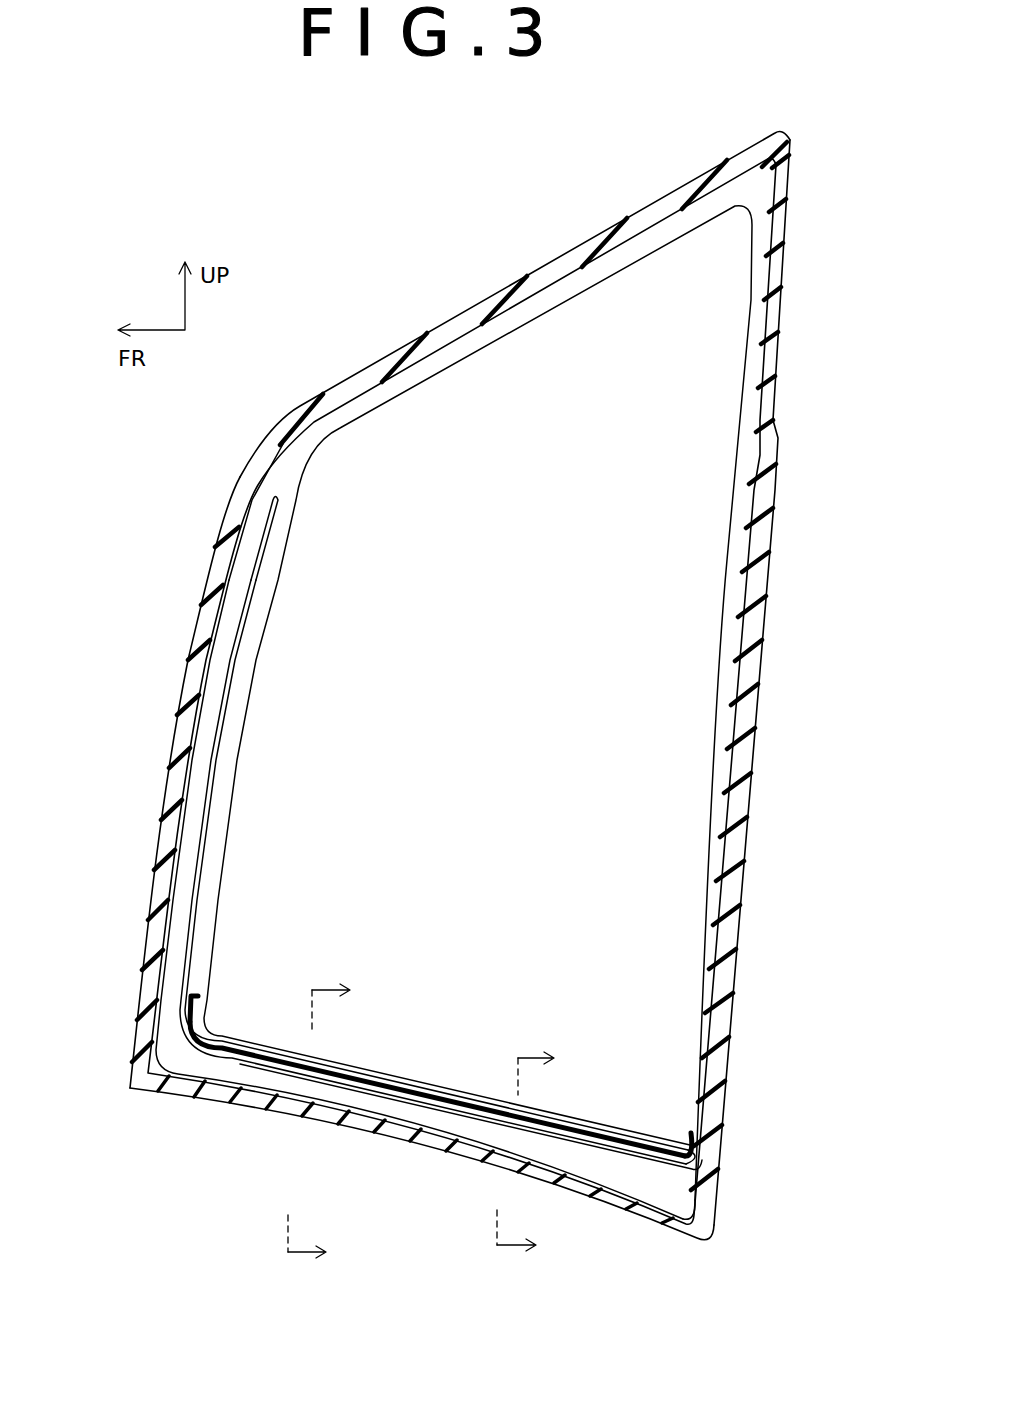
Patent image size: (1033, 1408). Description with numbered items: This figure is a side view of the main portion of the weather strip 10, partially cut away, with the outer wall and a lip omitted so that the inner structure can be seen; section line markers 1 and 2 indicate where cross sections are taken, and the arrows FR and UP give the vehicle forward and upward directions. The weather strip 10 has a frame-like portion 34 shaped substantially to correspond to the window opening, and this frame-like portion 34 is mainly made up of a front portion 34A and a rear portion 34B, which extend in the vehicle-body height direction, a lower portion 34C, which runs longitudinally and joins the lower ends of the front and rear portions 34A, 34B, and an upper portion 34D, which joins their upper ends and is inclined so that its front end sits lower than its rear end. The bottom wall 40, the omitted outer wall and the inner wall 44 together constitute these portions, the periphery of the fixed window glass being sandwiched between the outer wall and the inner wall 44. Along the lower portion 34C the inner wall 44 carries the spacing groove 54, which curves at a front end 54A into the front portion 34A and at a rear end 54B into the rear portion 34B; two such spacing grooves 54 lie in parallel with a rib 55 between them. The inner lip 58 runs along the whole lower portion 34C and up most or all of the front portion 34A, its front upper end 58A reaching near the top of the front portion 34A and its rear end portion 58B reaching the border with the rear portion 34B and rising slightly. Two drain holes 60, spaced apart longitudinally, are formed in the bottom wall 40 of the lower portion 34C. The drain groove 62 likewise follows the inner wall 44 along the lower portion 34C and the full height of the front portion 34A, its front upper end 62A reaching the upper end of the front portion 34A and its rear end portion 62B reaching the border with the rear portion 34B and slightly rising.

The weather strip 10 is at (456, 674).
The frame-like portion 34 is at (456, 674).
The front portion 34A is at (168, 724).
The rear portion 34B is at (760, 755).
The lower portion 34C is at (438, 1162).
The upper portion 34D is at (496, 284).
The bottom wall 40 is at (462, 328).
The inner wall 44 is at (480, 335).
The spacing groove 54 is at (441, 1059).
The front end of spacing groove 54A is at (197, 994).
The rear end of spacing groove 54B is at (690, 1122).
The rib 55 is at (372, 1082).
The inner lip 58 is at (499, 833).
The front upper end of inner lip 58A is at (278, 501).
The rear end portion of inner lip 58B is at (700, 1167).
The drain hole 60 is at (294, 1122).
The drain groove 62 is at (487, 831).
The front upper end of drain groove 62A is at (286, 450).
The rear end portion of drain groove 62B is at (705, 1190).
The section line 1 is at (332, 1129).
The section line 2 is at (539, 1154).